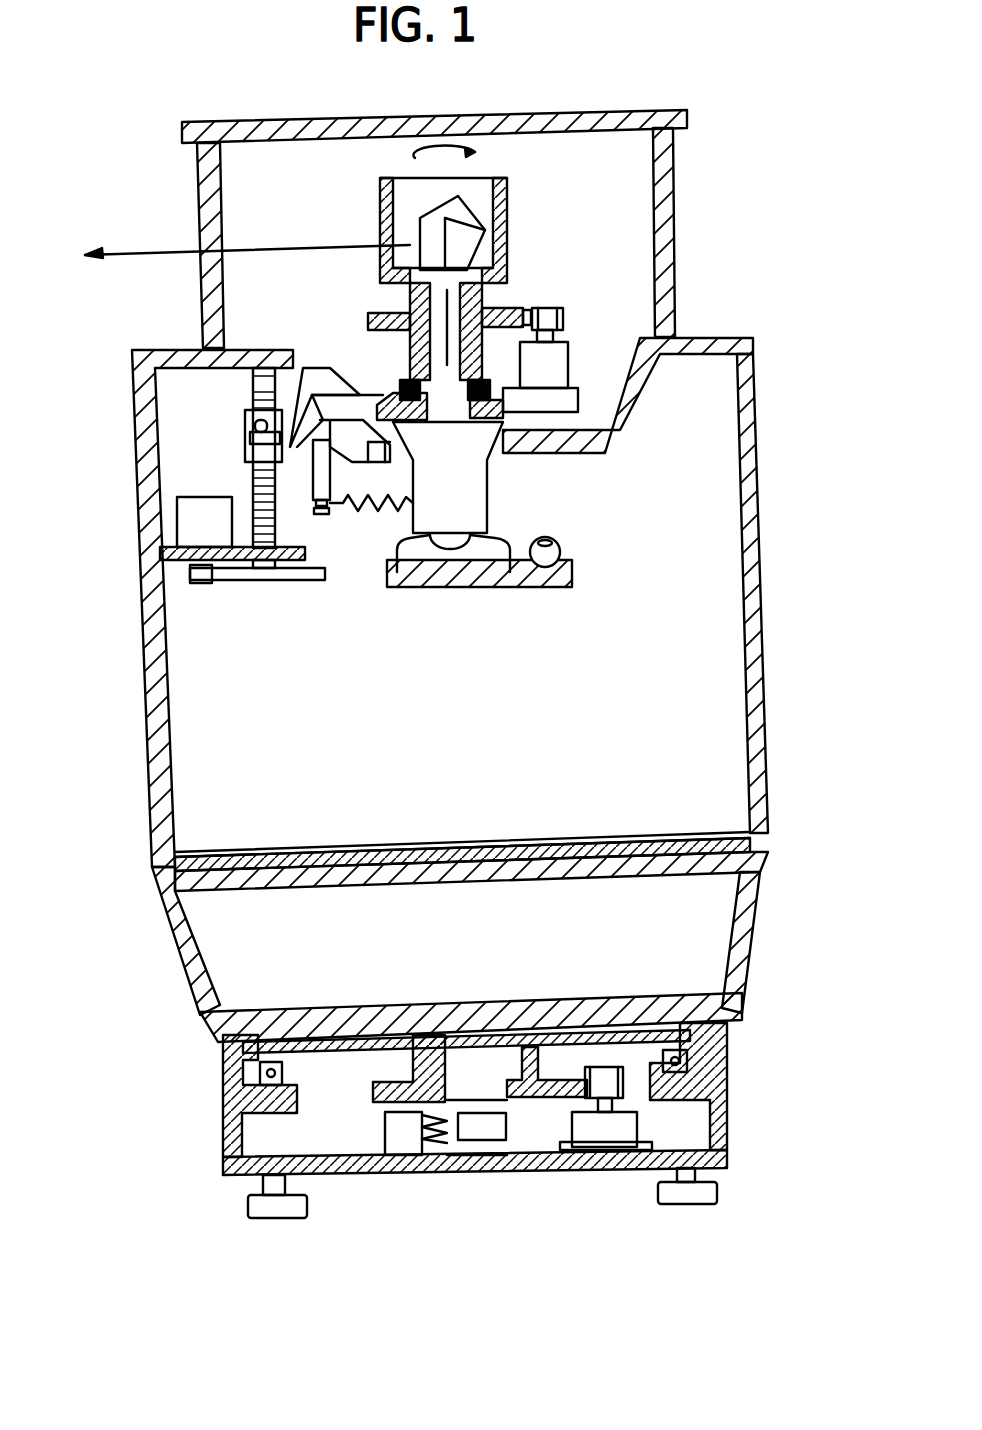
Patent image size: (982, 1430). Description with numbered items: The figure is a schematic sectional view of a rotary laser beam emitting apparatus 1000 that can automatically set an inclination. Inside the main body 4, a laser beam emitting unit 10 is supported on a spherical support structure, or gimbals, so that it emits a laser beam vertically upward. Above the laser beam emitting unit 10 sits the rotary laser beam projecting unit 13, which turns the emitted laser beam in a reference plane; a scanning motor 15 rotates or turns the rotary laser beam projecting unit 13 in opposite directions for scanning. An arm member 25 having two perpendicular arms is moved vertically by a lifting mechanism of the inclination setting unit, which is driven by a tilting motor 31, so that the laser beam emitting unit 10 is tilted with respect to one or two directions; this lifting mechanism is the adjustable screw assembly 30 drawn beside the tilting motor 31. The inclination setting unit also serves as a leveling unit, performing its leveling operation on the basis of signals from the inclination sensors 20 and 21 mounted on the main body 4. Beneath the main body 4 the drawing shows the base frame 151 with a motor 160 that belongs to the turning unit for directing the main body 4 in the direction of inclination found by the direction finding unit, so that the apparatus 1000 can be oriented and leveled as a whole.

The main body 4 is at (782, 708).
The laser beam emitting unit 10 is at (480, 515).
The rotary laser beam projecting unit 13 is at (505, 240).
The scanning motor 15 is at (570, 372).
The inclination sensor 20 is at (385, 542).
The inclination sensor 21 is at (560, 545).
The arm member 25 is at (355, 398).
The screw adjustment mechanism 30 is at (260, 592).
The tilting motor 31 is at (203, 515).
The base frame 151 is at (750, 1075).
The motor 160 is at (608, 1130).
The rotary laser beam emitting apparatus 1000 is at (420, 1192).